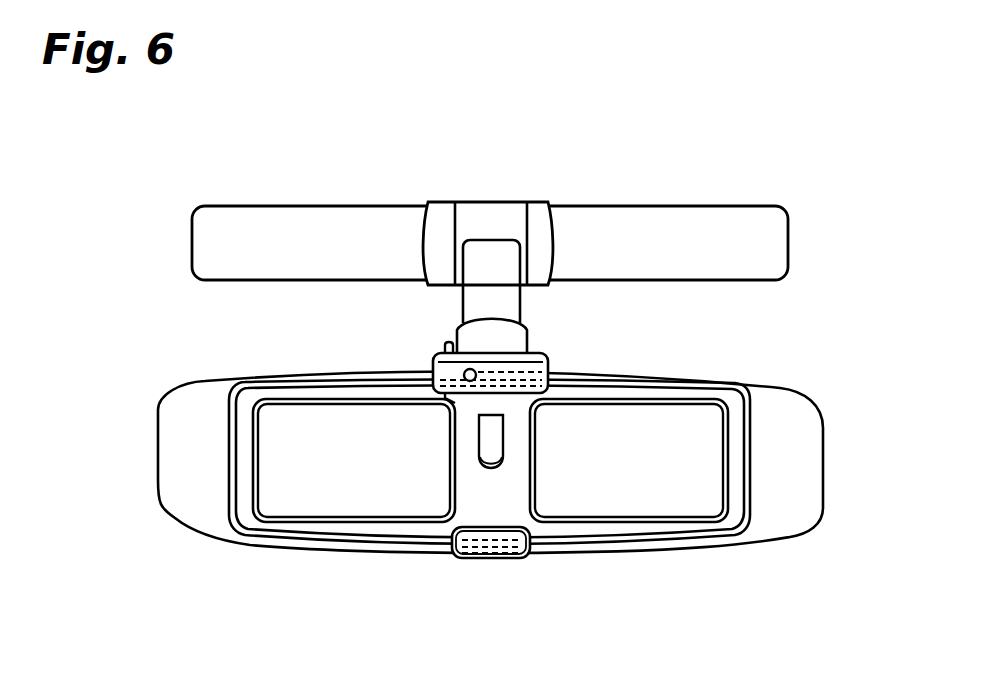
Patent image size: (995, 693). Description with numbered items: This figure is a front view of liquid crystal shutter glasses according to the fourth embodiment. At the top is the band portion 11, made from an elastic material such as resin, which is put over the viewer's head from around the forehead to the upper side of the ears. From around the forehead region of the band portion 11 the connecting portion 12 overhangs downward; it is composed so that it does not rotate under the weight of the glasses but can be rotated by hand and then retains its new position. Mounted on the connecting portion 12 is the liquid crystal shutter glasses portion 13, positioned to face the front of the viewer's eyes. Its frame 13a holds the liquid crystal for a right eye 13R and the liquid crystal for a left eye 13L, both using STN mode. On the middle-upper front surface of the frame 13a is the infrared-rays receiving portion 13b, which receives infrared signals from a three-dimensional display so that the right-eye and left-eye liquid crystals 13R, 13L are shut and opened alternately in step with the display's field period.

The band portion 11 is at (770, 249).
The connecting portion 12 is at (505, 307).
The liquid crystal shutter glasses portion 13 is at (747, 426).
The frame 13a is at (338, 393).
The infrared-rays receiving portion 13b is at (463, 375).
The liquid crystal for a right eye 13R is at (368, 502).
The liquid crystal for a left eye 13L is at (627, 502).